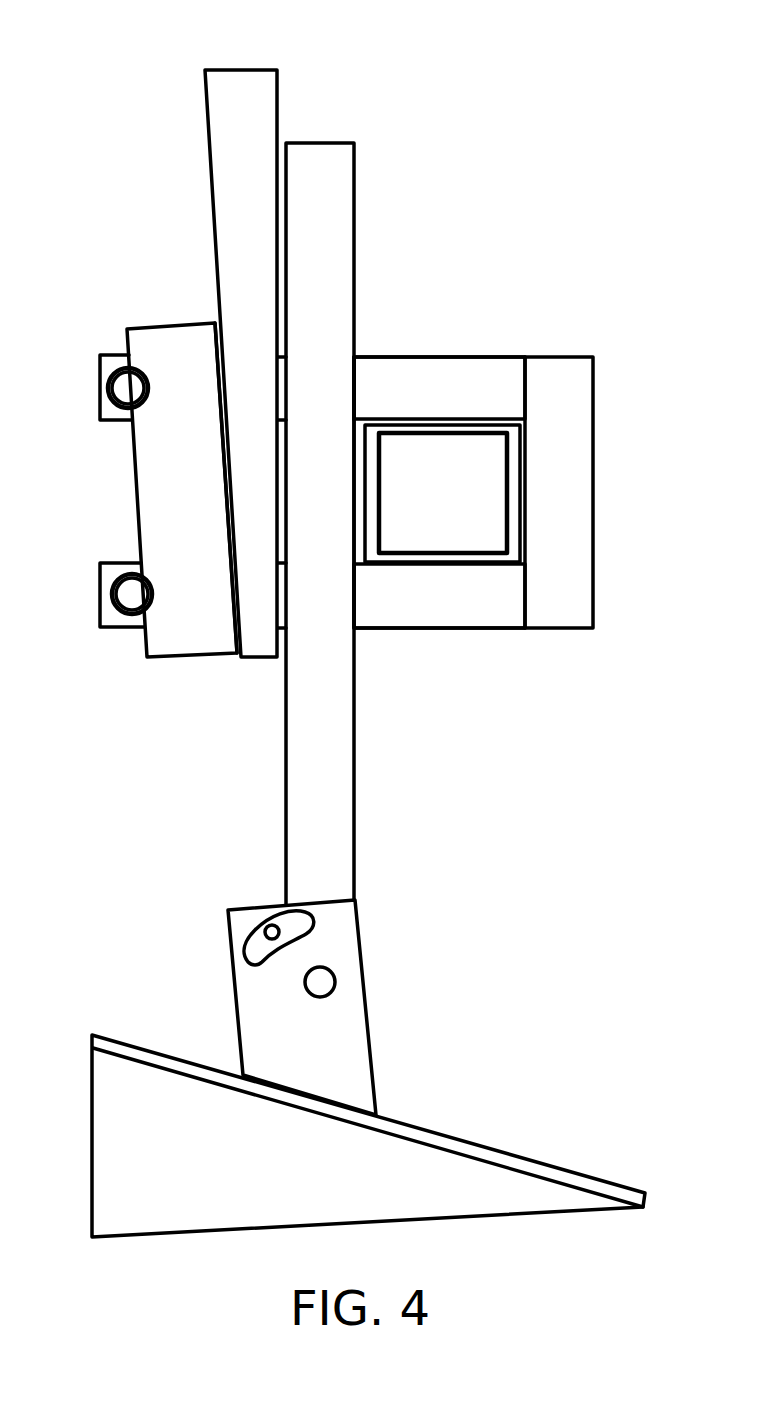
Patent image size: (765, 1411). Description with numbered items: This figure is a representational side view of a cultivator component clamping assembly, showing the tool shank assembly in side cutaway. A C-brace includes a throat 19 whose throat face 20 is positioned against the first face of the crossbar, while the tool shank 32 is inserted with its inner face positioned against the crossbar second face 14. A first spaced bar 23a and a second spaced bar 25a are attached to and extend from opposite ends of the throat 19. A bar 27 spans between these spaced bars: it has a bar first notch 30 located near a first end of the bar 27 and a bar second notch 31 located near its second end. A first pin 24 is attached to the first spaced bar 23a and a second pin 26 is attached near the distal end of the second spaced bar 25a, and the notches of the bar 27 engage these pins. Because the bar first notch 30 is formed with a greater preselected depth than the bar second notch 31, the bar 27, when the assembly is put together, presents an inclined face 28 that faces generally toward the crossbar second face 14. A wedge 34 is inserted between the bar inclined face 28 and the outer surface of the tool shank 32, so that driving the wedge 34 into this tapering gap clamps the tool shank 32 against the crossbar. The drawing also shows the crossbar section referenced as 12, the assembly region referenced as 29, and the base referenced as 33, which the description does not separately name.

The square shaft / ram 12 is at (500, 440).
The crossbar second face 14 is at (355, 417).
The throat 19 is at (522, 460).
The throat face 20 is at (467, 620).
The first spaced bar 23a is at (482, 370).
The first pin 24 is at (122, 380).
The second spaced bar 25a is at (522, 543).
The second pin 26 is at (130, 603).
The bar 27 is at (166, 345).
The inclined face 28 is at (220, 353).
The bearing plate assembly 29 is at (147, 477).
The bar first notch 30 is at (148, 392).
The bar second notch 31 is at (153, 595).
The tool shank 32 is at (335, 837).
The wedge base 33 is at (373, 1163).
The wedge 34 is at (252, 93).